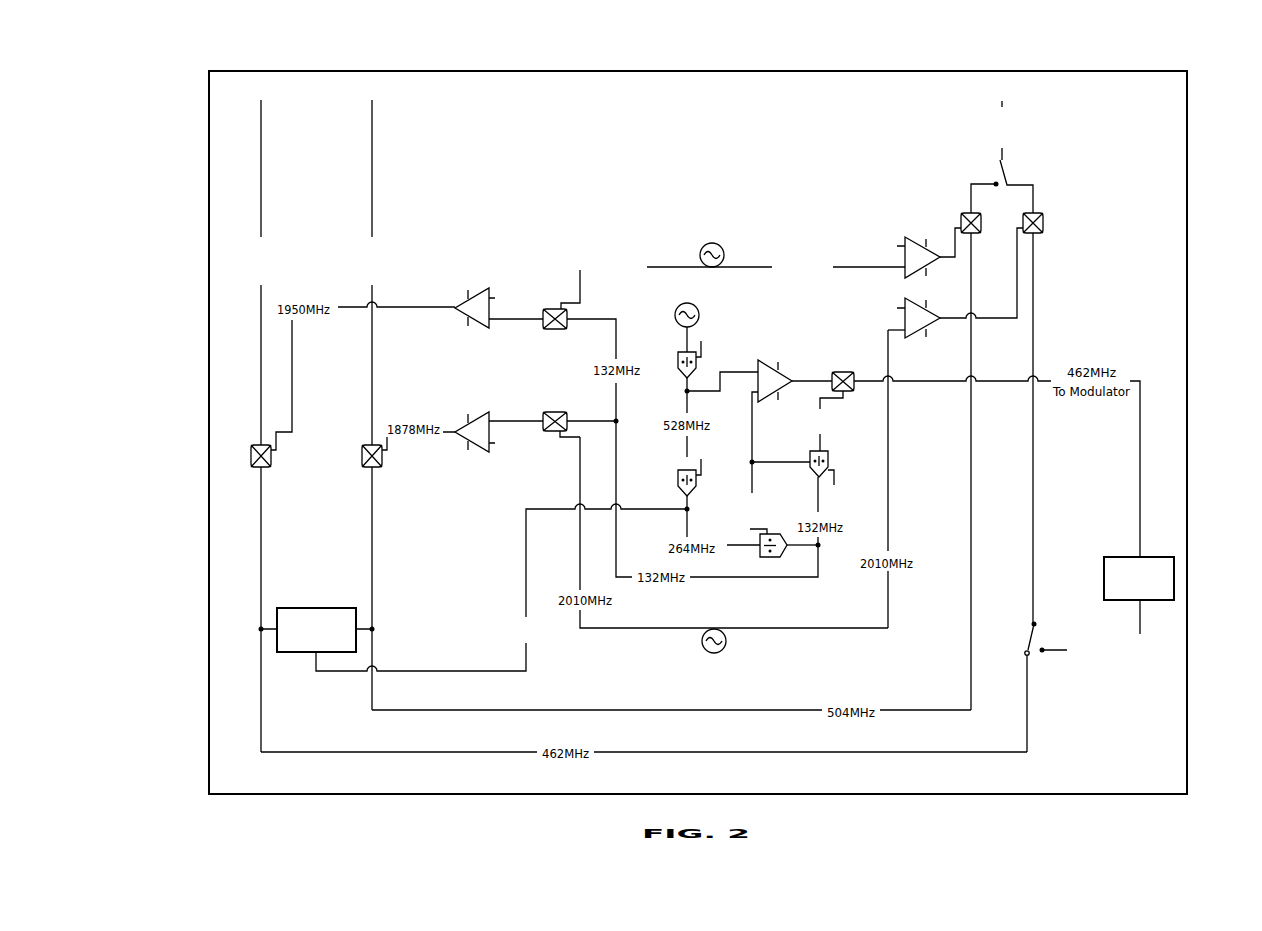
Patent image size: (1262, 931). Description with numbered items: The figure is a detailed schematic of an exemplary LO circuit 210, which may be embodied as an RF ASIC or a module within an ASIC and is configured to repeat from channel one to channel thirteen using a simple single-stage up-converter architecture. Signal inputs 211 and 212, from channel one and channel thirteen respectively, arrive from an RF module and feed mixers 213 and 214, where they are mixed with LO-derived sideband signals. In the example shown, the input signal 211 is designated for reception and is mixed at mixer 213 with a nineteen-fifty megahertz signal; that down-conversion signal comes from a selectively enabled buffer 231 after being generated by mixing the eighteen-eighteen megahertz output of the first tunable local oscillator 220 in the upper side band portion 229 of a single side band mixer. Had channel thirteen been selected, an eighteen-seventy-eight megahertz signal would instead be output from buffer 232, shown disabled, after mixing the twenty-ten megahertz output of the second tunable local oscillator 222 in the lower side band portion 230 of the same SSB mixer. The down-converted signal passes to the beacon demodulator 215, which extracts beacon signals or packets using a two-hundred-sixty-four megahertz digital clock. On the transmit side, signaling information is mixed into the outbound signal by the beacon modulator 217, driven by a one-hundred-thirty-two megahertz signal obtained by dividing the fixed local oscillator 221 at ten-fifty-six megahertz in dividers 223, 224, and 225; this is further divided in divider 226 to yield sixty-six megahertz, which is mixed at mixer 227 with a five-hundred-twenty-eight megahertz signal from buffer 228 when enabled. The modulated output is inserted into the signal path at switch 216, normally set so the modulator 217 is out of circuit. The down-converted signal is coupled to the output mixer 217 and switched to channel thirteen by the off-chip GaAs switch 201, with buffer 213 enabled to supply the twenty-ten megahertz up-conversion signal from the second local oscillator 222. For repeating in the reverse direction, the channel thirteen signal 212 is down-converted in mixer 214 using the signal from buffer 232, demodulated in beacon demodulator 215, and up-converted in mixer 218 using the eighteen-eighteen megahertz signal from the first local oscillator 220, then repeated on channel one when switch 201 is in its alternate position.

The switch 201 is at (1003, 158).
The LO circuit 210 is at (1186, 97).
The signal input 211 is at (262, 127).
The signal input 212 is at (372, 127).
The mixer 213 is at (251, 452).
The mixer 214 is at (362, 458).
The beacon demodulator 215 is at (277, 640).
The switch 216 is at (1032, 653).
The beacon modulator 217 is at (1044, 223).
The mixer 218 is at (971, 213).
The LO 1 220 is at (737, 203).
The fixed LO 221 is at (673, 298).
The LO 2 222 is at (664, 689).
The divider 223 is at (562, 438).
The divider 224 is at (681, 494).
The divider 225 is at (772, 557).
The divider 226 is at (828, 455).
The mixer 227 is at (843, 372).
The buffer 228 is at (765, 360).
The upper side band portion 229 is at (560, 309).
The lower side band portion 230 is at (680, 372).
The buffer 231 is at (488, 288).
The buffer 232 is at (458, 432).